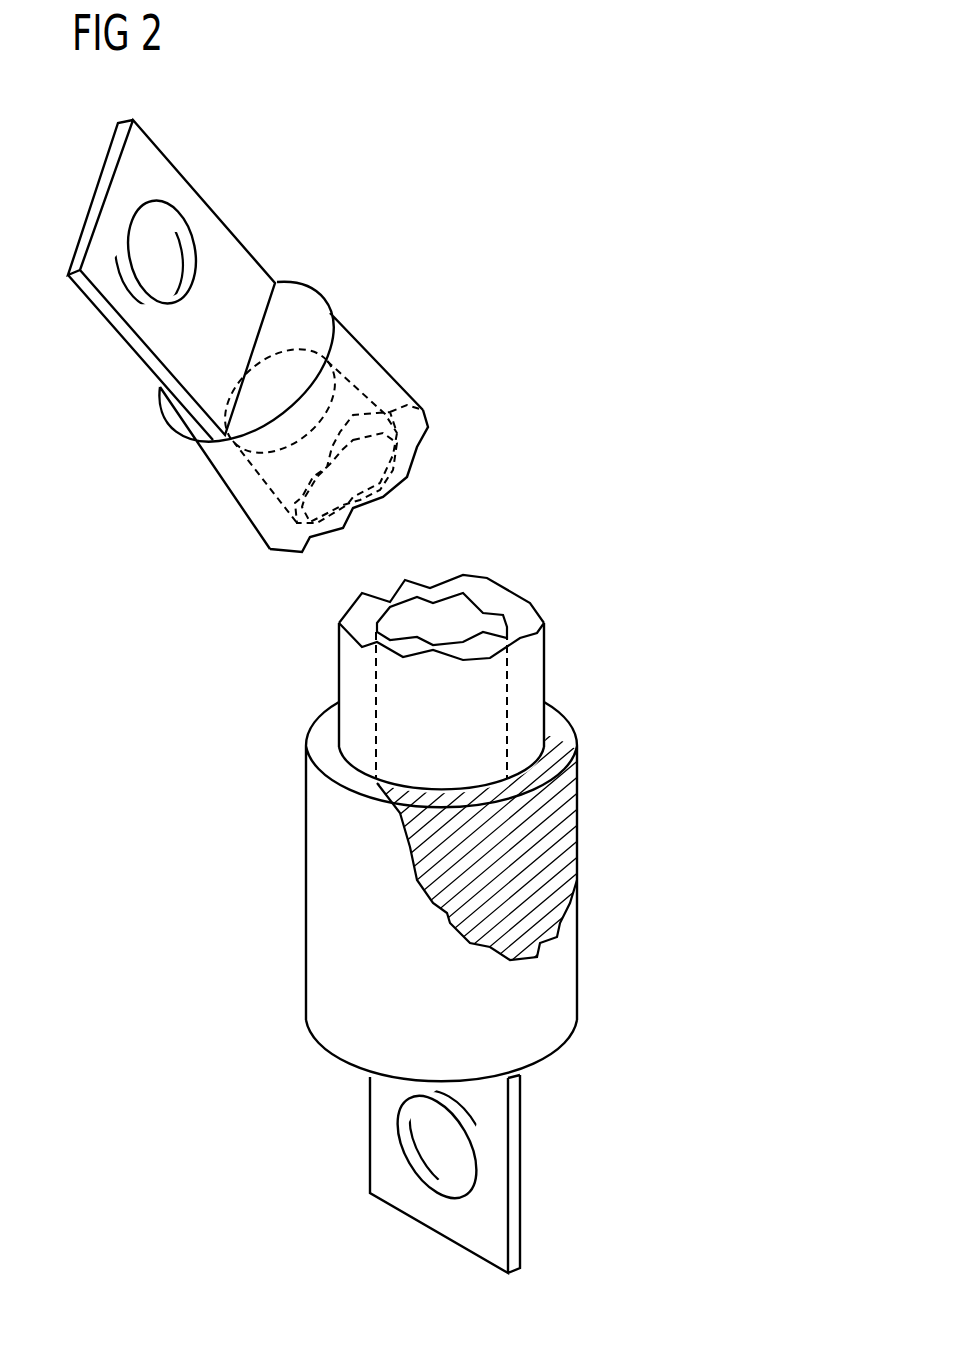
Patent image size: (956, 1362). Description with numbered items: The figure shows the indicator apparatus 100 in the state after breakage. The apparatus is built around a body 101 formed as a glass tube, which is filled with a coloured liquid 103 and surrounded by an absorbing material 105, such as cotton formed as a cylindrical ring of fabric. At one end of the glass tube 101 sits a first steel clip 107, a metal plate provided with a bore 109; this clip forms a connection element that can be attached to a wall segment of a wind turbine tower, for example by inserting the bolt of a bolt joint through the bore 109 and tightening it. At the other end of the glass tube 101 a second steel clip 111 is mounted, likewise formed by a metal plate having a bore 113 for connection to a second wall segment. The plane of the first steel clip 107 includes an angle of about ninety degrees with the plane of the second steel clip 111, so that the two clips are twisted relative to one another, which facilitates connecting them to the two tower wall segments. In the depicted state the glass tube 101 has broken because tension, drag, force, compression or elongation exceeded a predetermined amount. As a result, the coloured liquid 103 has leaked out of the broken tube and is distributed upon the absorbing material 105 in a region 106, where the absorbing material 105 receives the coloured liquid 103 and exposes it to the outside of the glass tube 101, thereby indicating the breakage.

The indicator apparatus 100 is at (558, 200).
The body 101 is at (372, 367).
The coloured liquid 103 is at (458, 593).
The absorbing material 105 is at (563, 993).
The region 106 is at (563, 852).
The first steel clip 107 is at (232, 257).
The bore 109 is at (163, 243).
The second steel clip 111 is at (493, 1145).
The bore 113 is at (428, 1138).